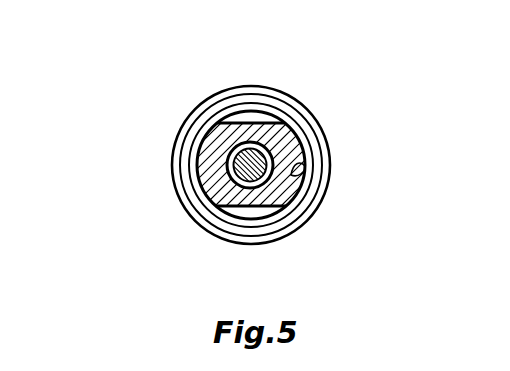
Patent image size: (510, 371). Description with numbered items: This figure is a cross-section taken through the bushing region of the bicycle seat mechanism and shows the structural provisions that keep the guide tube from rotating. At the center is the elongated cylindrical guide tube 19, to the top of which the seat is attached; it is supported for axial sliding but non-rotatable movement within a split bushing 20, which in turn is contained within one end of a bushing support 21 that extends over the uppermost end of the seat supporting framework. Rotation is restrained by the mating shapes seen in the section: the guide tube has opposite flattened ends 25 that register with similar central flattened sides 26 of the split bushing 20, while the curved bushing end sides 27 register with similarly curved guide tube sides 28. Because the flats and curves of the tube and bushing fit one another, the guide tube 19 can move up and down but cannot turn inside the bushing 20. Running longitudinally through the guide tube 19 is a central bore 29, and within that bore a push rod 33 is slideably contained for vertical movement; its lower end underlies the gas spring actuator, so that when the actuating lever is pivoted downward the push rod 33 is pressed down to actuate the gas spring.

The guide tube 19 is at (218, 128).
The split bushing 20 is at (218, 116).
The bushing support 21 is at (250, 88).
The guide tube flattened ends 25 is at (241, 208).
The bushing central flattened sides 26 is at (308, 197).
The curved bushing end sides 27 is at (291, 175).
The curved guide tube sides 28 is at (305, 148).
The central bore 29 is at (258, 143).
The push rod 33 is at (235, 170).